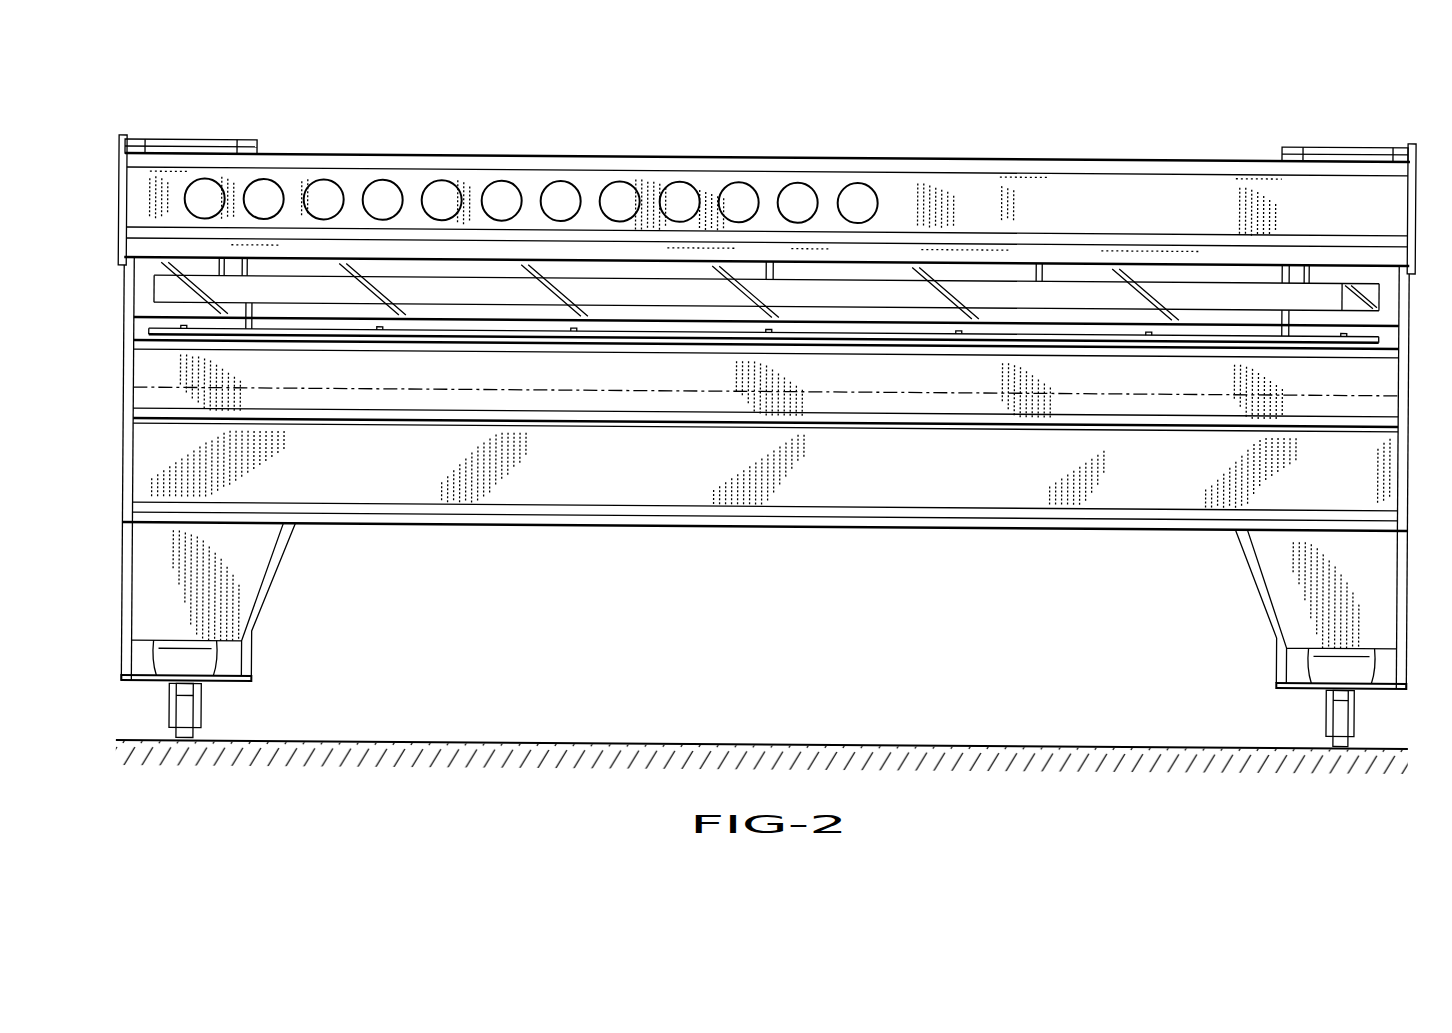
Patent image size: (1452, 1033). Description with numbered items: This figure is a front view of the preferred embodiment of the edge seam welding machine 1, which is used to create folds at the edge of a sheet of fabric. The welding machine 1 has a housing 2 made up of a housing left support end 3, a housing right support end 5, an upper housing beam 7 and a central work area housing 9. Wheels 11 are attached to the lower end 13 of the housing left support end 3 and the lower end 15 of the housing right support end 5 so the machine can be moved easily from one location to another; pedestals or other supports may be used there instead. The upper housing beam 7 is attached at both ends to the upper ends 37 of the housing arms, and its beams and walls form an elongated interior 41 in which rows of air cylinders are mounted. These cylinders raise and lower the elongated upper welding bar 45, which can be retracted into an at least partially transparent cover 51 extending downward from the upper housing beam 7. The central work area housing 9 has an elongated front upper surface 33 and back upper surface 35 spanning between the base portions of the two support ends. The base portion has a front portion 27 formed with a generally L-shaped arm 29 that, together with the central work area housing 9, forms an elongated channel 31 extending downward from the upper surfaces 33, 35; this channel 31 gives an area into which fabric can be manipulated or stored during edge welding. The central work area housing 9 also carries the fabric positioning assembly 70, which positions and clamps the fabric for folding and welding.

The welding machine 1 is at (1252, 80).
The housing 2 is at (1046, 524).
The housing left support end 3 is at (270, 589).
The housing right support end 5 is at (1258, 600).
The upper housing beam 7 is at (1130, 155).
The central work area housing 9 is at (708, 404).
The wheels 11 is at (192, 710).
The lower end of the housing left support end 13 is at (150, 683).
The lower end of the housing right support end 15 is at (1380, 681).
The front portion 27 is at (647, 375).
The L-shaped arm 29 is at (766, 448).
The elongated channel 31 is at (868, 373).
The front upper surface 33 is at (1193, 340).
The back upper surface 35 is at (764, 330).
The upper ends 37 is at (192, 138).
The elongated interior 41 is at (1033, 203).
The upper welding bar 45 is at (1085, 288).
The at least partially transparent cover 51 is at (1114, 302).
The fabric positioning assembly 70 is at (1328, 324).